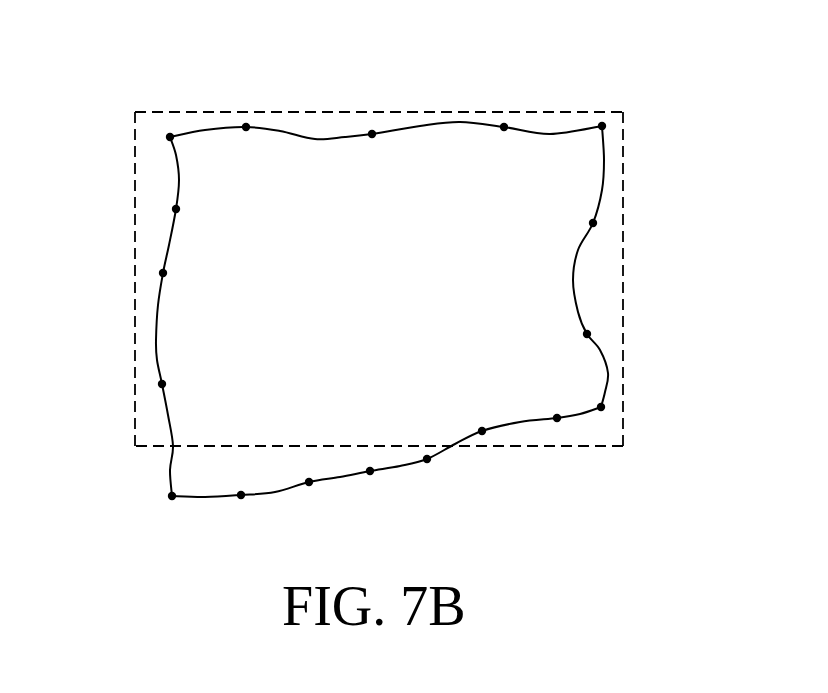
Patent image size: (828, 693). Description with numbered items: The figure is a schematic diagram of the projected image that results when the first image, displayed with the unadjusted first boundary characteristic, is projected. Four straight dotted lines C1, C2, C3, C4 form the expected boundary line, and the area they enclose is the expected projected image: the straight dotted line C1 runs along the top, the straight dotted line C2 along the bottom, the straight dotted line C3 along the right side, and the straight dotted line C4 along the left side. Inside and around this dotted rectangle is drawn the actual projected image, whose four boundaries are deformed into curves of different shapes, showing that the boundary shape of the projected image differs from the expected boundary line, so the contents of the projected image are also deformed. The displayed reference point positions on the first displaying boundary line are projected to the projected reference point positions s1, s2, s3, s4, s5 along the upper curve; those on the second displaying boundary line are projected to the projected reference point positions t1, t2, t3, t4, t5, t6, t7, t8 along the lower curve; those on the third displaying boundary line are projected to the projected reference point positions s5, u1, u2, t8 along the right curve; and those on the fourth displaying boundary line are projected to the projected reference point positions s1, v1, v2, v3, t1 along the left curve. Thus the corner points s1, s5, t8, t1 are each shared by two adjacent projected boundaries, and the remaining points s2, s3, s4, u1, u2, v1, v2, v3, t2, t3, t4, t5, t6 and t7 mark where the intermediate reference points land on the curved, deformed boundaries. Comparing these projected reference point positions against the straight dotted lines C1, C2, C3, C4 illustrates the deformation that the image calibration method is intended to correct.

The straight dotted line C1 is at (327, 109).
The straight dotted line C2 is at (517, 447).
The straight dotted line C3 is at (625, 279).
The straight dotted line C4 is at (129, 322).
The projected reference point position s1 is at (170, 133).
The projected reference point position s2 is at (246, 124).
The projected reference point position s3 is at (372, 131).
The projected reference point position s4 is at (504, 124).
The projected reference point position s5 is at (602, 123).
The projected reference point position t1 is at (172, 500).
The projected reference point position t2 is at (241, 499).
The projected reference point position t3 is at (309, 486).
The projected reference point position t4 is at (370, 475).
The projected reference point position t5 is at (427, 463).
The projected reference point position t6 is at (482, 435).
The projected reference point position t7 is at (557, 422).
The projected reference point position t8 is at (602, 410).
The projected reference point position u1 is at (597, 223).
The projected reference point position u2 is at (591, 334).
The projected reference point position v1 is at (173, 209).
The projected reference point position v2 is at (160, 273).
The projected reference point position v3 is at (159, 384).